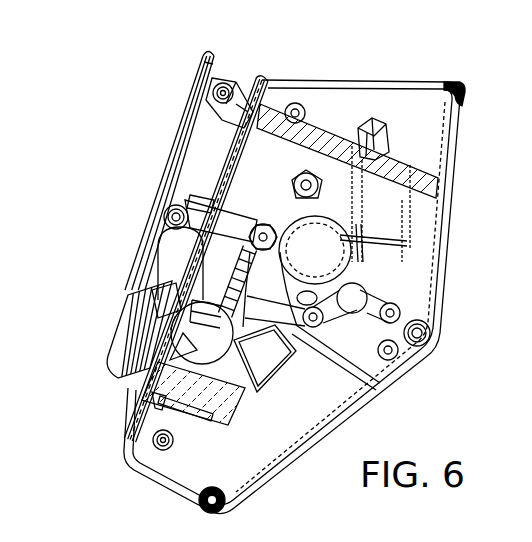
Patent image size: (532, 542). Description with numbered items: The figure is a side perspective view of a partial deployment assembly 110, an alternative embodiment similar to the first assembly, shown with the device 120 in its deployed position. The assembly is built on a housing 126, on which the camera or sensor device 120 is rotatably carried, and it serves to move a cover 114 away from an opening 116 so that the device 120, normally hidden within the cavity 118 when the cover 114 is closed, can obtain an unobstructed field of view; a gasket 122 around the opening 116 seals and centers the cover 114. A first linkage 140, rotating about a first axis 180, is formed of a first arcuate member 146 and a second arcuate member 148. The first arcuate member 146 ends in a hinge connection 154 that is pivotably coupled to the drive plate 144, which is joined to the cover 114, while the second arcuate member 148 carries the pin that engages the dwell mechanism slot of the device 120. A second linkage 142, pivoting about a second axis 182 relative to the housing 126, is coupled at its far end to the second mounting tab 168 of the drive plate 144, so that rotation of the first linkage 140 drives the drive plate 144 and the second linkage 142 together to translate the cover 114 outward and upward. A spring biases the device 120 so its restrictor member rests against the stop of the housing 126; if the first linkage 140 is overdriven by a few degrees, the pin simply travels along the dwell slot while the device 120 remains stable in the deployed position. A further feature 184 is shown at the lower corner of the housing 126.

The deployment assembly 110 is at (372, 62).
The cover 114 is at (210, 68).
The opening 116 is at (122, 389).
The cavity 118 is at (281, 438).
The device 120 is at (113, 341).
The gasket 122 is at (265, 85).
The housing 126 is at (428, 84).
The first linkage 140 is at (242, 190).
The second linkage 142 is at (220, 118).
The drive plate 144 is at (240, 54).
The first arcuate member 146 is at (197, 200).
The second arcuate member 148 is at (274, 270).
The hinge connection 154 is at (172, 227).
The second mounting tab 168 is at (218, 82).
The first axis 180 is at (261, 234).
The second axis 182 is at (305, 112).
The fastener boss 184 is at (158, 440).